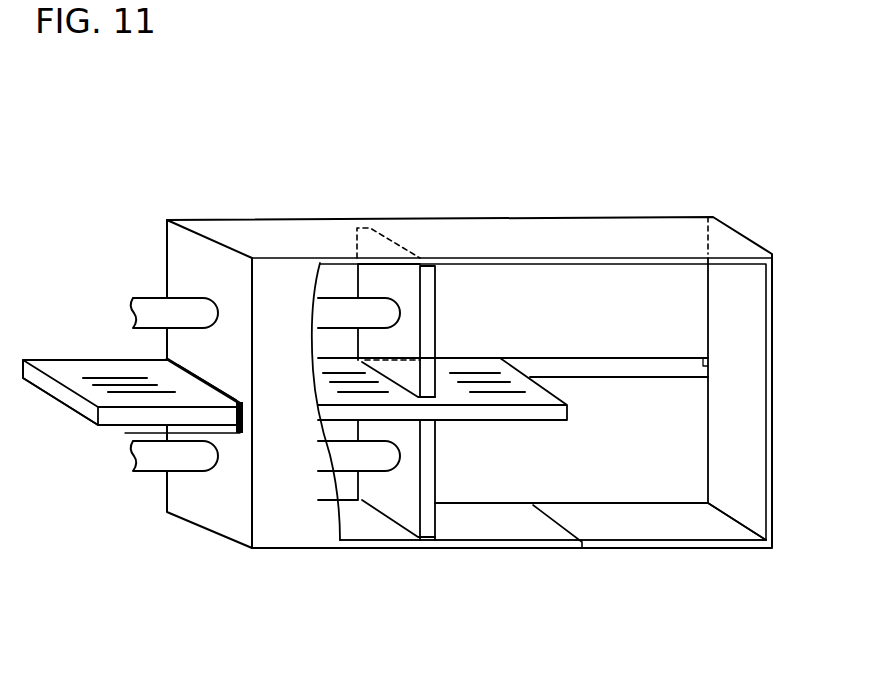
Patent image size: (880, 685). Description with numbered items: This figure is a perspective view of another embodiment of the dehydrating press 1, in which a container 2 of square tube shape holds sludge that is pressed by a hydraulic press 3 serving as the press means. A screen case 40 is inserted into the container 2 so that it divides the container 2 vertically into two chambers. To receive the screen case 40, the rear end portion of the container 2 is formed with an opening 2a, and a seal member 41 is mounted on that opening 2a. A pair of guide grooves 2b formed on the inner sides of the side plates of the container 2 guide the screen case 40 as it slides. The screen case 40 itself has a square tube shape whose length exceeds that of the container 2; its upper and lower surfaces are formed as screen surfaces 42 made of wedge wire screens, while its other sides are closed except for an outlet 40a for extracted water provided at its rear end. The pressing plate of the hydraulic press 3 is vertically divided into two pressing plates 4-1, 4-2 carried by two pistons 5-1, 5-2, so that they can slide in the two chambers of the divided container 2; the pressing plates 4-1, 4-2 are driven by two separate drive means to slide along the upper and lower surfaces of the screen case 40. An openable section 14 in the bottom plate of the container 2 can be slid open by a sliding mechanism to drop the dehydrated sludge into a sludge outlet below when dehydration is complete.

The dehydrating press 1 is at (757, 190).
The container 2 is at (538, 236).
The opening 2a is at (125, 433).
The guide grooves 2b is at (652, 357).
The hydraulic press 3 is at (343, 292).
The pressing plate 4-1 is at (394, 280).
The pressing plate 4-2 is at (392, 510).
The piston 5-1 is at (190, 305).
The piston 5-2 is at (143, 465).
The openable section 14 is at (648, 525).
The screen case 40 is at (117, 375).
The outlet for extracted water 40a is at (60, 398).
The seal member 41 is at (238, 435).
The screen surfaces 42 is at (465, 368).